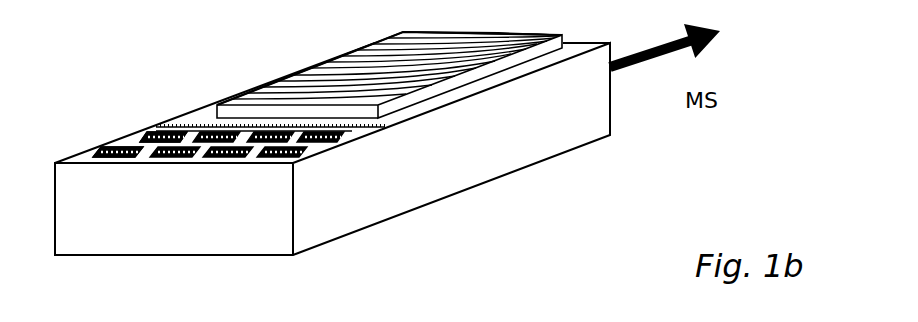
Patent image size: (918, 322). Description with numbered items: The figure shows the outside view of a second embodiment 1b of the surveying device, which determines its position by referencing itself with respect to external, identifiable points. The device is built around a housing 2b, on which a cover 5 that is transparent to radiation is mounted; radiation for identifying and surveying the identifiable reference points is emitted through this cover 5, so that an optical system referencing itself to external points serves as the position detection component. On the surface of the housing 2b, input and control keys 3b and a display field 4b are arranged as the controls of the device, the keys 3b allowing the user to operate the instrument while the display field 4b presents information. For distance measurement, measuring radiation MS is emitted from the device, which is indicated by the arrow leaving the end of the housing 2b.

The second embodiment of the surveying device 1b is at (334, 131).
The housing 2b is at (342, 182).
The input and control keys 3b is at (163, 133).
The display field 4b is at (203, 122).
The cover 5 is at (338, 57).